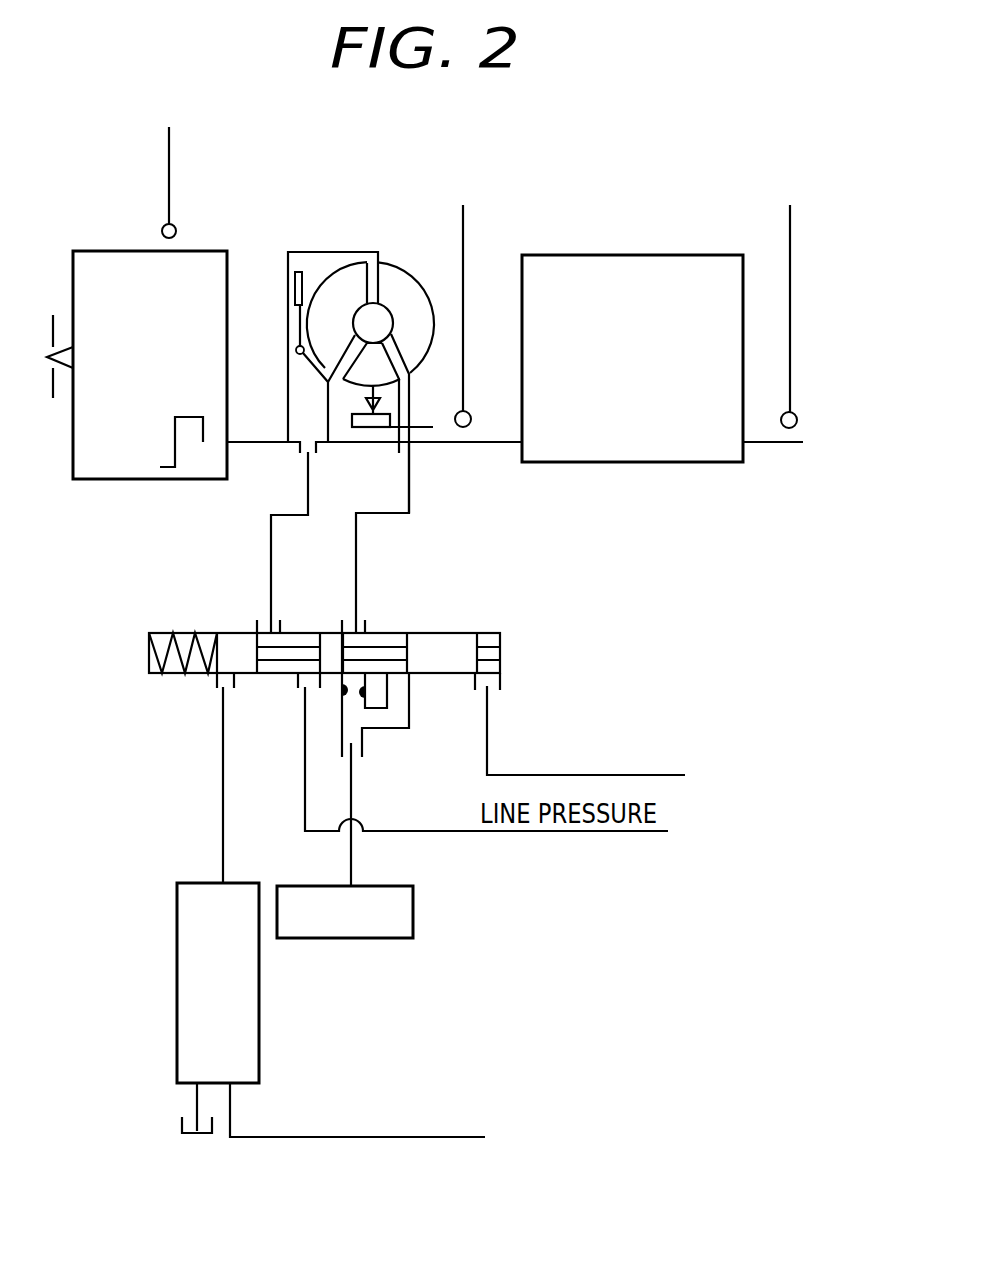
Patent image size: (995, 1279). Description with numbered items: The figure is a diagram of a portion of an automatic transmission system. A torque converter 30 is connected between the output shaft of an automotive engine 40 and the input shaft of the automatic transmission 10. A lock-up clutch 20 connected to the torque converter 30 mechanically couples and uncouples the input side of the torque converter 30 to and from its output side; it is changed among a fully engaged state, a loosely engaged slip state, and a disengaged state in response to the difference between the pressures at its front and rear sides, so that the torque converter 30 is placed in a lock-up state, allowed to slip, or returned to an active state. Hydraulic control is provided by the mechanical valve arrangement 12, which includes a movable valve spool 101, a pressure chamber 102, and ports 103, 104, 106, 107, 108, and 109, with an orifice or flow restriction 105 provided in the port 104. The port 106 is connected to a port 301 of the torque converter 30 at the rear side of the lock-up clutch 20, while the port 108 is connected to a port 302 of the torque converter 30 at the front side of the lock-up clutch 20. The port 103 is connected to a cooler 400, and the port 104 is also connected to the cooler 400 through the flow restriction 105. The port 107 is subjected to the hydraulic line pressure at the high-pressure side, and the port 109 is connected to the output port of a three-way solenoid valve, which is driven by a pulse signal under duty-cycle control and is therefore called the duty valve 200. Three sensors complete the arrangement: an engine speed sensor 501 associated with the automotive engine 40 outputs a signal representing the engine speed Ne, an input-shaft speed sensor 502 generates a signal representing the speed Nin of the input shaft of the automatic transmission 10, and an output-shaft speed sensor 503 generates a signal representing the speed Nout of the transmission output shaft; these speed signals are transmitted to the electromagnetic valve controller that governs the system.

The automatic transmission 10 is at (690, 255).
The mechanical valve arrangement 12 is at (420, 602).
The lock-up clutch 20 is at (310, 280).
The torque converter 30 is at (404, 262).
The automotive engine 40 is at (207, 251).
The movable valve spool 101 is at (302, 650).
The pressure chamber 102 is at (490, 642).
The port 103 is at (398, 692).
The port 104 is at (340, 682).
The flow restriction 105 is at (362, 697).
The port 106 is at (360, 612).
The port 107 is at (300, 693).
The port 108 is at (263, 622).
The port 109 is at (220, 692).
The duty valve 200 is at (238, 883).
The port 301 is at (411, 460).
The port 302 is at (302, 452).
The cooler 400 is at (383, 886).
The engine speed sensor 501 is at (175, 223).
The input-shaft speed sensor 502 is at (465, 427).
The output-shaft speed sensor 503 is at (795, 427).